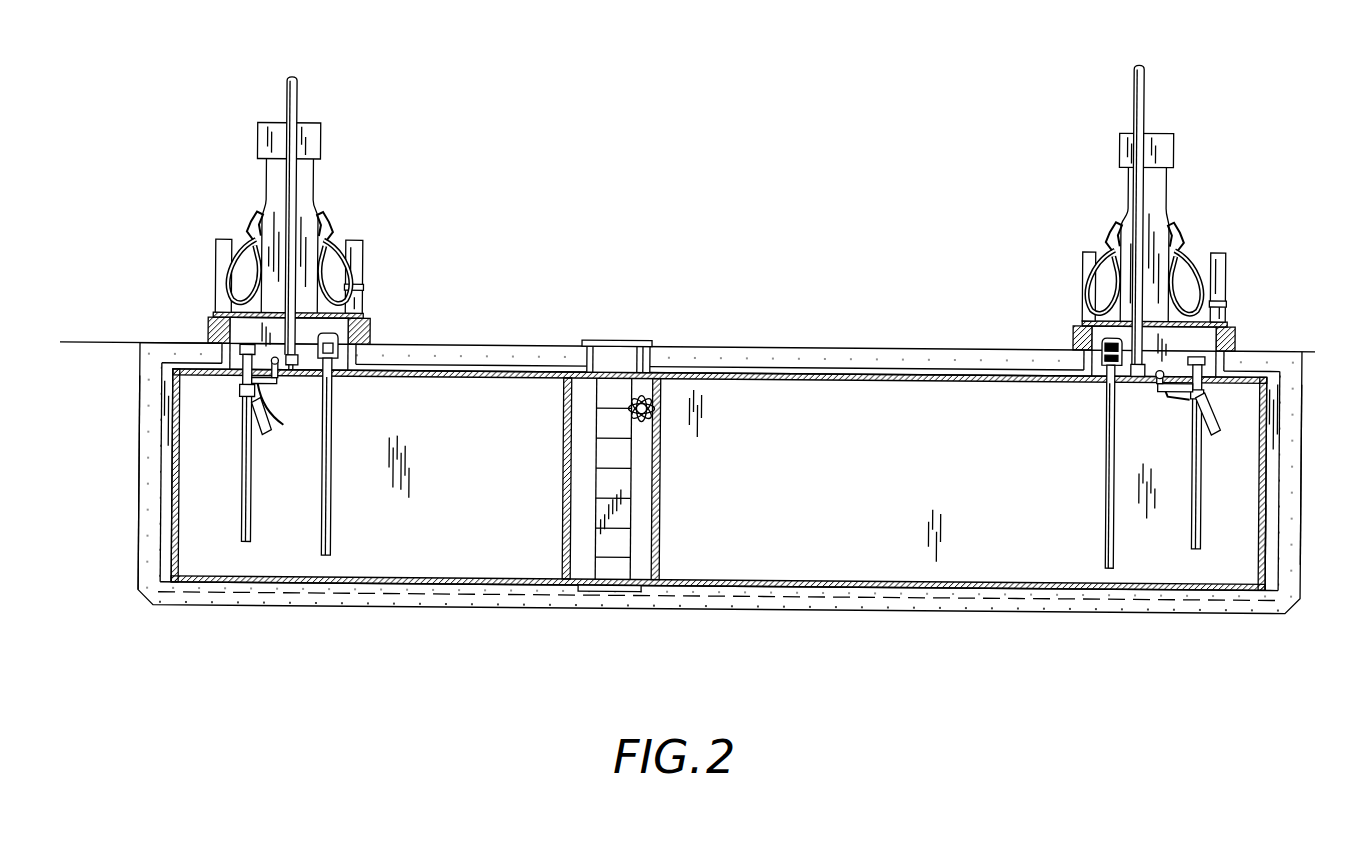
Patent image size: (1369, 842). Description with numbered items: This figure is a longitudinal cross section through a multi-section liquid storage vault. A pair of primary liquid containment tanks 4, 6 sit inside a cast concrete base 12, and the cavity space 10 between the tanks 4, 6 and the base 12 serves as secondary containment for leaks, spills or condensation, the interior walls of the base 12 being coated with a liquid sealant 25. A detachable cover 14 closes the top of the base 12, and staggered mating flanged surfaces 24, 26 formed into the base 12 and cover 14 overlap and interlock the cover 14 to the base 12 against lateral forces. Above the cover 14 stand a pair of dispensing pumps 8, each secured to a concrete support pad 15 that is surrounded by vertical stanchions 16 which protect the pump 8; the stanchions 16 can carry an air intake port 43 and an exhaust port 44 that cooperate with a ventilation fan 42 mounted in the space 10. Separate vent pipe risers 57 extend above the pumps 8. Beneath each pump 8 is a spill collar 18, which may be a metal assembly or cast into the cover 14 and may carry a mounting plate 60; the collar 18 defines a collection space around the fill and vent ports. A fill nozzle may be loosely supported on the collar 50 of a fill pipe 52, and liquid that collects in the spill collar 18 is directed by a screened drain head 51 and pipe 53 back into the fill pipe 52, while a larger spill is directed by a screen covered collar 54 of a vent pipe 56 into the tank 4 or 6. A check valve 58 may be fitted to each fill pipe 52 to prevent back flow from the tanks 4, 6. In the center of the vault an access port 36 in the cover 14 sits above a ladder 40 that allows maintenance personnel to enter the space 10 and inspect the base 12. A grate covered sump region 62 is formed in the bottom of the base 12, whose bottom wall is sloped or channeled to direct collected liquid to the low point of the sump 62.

The liquid containment tank 4 is at (175, 488).
The liquid containment tank 6 is at (1267, 527).
The dispensing pump 8 is at (316, 124).
The cavity space 10 is at (646, 560).
The cast concrete base 12 is at (1300, 477).
The detachable cover 14 is at (142, 363).
The concrete support pad 15 is at (369, 323).
The vertical stanchion 16 is at (357, 243).
The spill collar 18 is at (221, 318).
The flanged surface 24 is at (153, 368).
The liquid sealant 25 is at (160, 565).
The flanged surface 26 is at (152, 360).
The port 36 is at (618, 340).
The ladder 40 is at (634, 480).
The ventilation fan 42 is at (654, 412).
The air intake port 43 is at (363, 286).
The exhaust port 44 is at (1226, 302).
The fill pipe collar 50 is at (242, 345).
The screened drain head 51 is at (280, 382).
The fill pipe 52 is at (243, 502).
The drain pipe 53 is at (284, 427).
The screen covered collar 54 is at (336, 356).
The vent pipe 56 is at (333, 502).
The vent pipe riser 57 is at (283, 92).
The check valve 58 is at (270, 428).
The mounting plate 60 is at (371, 334).
The sump region 62 is at (624, 588).